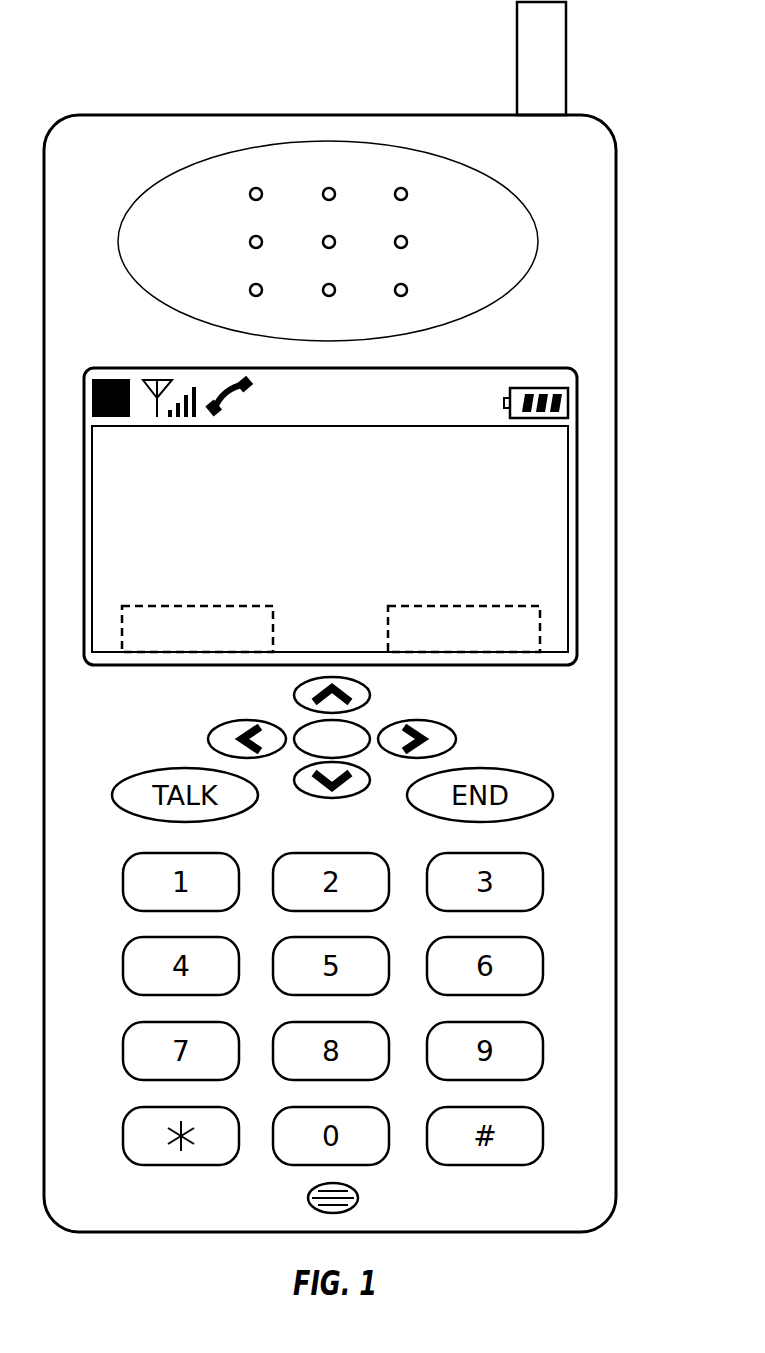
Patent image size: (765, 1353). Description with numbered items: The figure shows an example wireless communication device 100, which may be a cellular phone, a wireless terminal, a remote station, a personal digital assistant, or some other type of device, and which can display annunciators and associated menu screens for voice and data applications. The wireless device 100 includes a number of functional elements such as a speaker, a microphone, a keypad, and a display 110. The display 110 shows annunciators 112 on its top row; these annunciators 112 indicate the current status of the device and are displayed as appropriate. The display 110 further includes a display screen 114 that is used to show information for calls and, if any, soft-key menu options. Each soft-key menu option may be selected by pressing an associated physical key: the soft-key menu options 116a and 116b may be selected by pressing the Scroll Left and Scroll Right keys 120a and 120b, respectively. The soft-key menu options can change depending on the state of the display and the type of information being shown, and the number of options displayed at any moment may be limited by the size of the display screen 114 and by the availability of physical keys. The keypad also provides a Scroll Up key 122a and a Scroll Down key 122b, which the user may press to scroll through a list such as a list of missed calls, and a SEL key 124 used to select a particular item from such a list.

The wireless communication device 100 is at (322, 114).
The display 110 is at (513, 370).
The annunciators 112 is at (138, 377).
The display screen 114 is at (325, 425).
The soft-key menu option 116a is at (178, 606).
The soft-key menu option 116b is at (485, 606).
The Scroll Left key 120a is at (210, 741).
The Scroll Right key 120b is at (455, 741).
The Scroll Up key 122a is at (296, 700).
The Scroll Down key 122b is at (327, 798).
The SEL key 124 is at (370, 726).